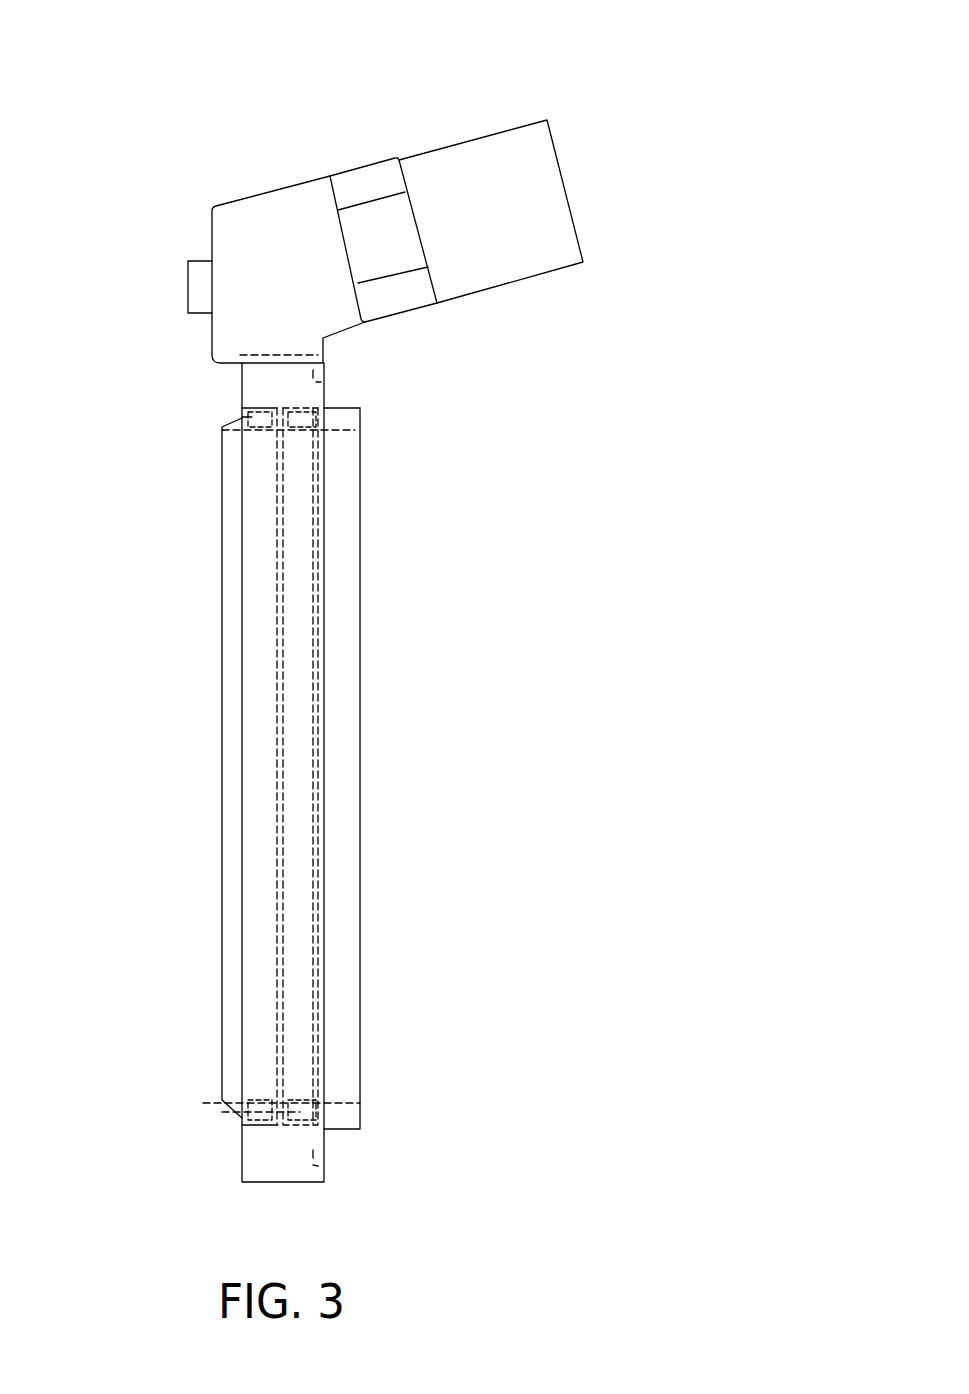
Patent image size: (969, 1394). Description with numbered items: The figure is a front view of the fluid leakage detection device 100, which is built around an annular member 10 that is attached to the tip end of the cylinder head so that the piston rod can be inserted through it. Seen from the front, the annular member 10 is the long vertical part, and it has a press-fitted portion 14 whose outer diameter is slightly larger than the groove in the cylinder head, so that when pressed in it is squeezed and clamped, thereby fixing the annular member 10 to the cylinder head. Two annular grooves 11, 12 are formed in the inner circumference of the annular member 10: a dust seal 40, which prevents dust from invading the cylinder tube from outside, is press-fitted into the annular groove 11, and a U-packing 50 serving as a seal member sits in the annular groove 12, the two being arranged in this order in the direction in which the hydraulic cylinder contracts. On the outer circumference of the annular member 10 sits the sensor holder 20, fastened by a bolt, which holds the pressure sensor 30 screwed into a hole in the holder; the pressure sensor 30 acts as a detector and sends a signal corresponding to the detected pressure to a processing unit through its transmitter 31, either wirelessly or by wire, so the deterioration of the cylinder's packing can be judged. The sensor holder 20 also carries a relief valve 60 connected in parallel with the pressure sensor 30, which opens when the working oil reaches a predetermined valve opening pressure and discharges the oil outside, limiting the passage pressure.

The fluid leakage detection device 100 is at (589, 127).
The annular member 10 is at (241, 708).
The annular groove 11 is at (203, 1105).
The annular groove 12 is at (327, 1112).
The press-fitted portion 14 is at (343, 532).
The sensor holder 20 is at (253, 237).
The pressure sensor 30 is at (418, 154).
The transmitter 31 is at (502, 165).
The dust seal 40 is at (228, 592).
The U-packing 50 is at (360, 407).
The relief valve 60 is at (202, 283).